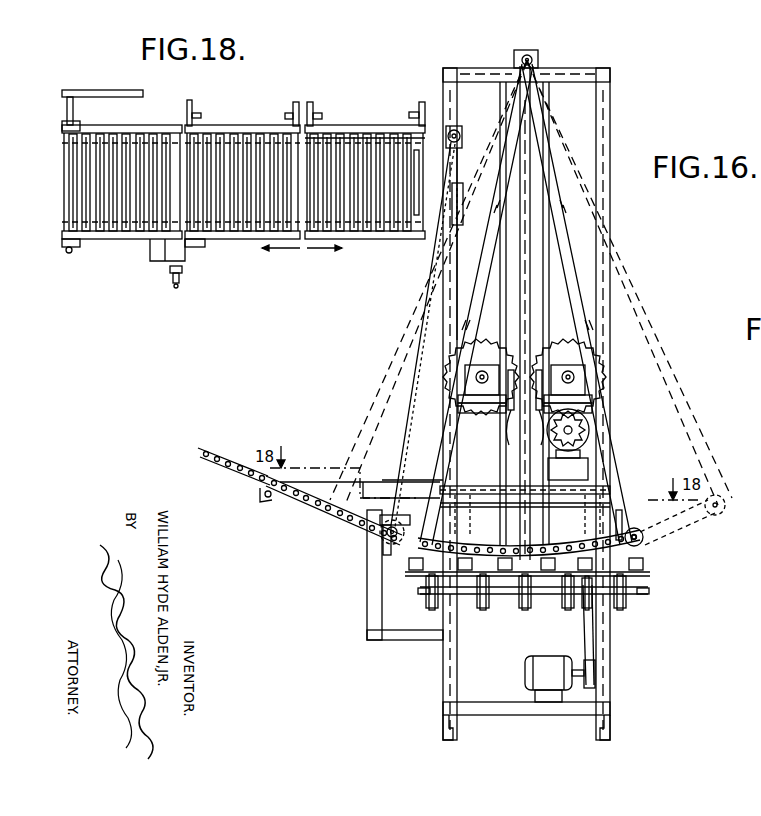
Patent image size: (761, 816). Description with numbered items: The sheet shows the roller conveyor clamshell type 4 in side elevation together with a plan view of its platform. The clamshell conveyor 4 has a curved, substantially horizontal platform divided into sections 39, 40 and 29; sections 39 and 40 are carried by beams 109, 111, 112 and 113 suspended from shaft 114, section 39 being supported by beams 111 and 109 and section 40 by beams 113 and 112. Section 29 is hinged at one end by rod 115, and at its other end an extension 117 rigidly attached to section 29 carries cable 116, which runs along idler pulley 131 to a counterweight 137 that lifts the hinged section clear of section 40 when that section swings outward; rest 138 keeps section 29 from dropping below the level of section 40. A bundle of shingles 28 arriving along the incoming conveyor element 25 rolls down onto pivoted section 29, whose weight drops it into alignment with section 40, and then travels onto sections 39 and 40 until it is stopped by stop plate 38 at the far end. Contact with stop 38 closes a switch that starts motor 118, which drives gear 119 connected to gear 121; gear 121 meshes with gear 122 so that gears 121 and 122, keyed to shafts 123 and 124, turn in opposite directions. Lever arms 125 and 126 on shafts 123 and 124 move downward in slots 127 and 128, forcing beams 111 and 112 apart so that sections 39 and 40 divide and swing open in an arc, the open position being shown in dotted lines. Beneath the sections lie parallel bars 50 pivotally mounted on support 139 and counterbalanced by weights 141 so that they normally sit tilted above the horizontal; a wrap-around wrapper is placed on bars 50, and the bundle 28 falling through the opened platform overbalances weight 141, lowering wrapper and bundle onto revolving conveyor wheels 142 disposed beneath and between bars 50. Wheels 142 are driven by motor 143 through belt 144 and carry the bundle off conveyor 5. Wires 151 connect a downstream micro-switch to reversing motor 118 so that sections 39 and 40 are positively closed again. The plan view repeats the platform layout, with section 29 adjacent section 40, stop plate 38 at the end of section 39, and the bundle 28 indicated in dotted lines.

In FIG. 16, the roller conveyor clamshell type 4 is at (653, 305).
In FIG. 16, the conveyor 5 is at (616, 650).
In FIG. 16, the feed chain conveyor 25 is at (204, 445).
In FIG. 18, the bundle of shingles 28 is at (356, 134).
In FIG. 16, the bundle of shingles 28 is at (480, 488).
In FIG. 18, the hinged platform section 29 is at (125, 232).
In FIG. 16, the hinged platform section 29 is at (306, 505).
In FIG. 18, the stop plate 38 is at (417, 215).
In FIG. 16, the stop plate 38 is at (621, 512).
In FIG. 18, the platform section 39 is at (378, 232).
In FIG. 16, the platform section 39 is at (640, 546).
In FIG. 18, the platform section 40 is at (252, 232).
In FIG. 16, the platform section 40 is at (480, 541).
In FIG. 16, the parallel bars 50 is at (472, 565).
In FIG. 18, the beam 109 is at (418, 108).
In FIG. 16, the beam 109 is at (606, 436).
In FIG. 18, the beam 111 is at (312, 108).
In FIG. 16, the beam 111 is at (543, 287).
In FIG. 18, the beam 112 is at (295, 104).
In FIG. 16, the beam 112 is at (506, 287).
In FIG. 18, the beam 113 is at (194, 112).
In FIG. 16, the beam 113 is at (370, 382).
In FIG. 16, the shaft 114 is at (527, 52).
In FIG. 18, the rod 115 is at (69, 253).
In FIG. 16, the rod 115 is at (268, 500).
In FIG. 18, the cable 116 is at (170, 270).
In FIG. 16, the cable 116 is at (412, 438).
In FIG. 18, the extension 117 is at (173, 285).
In FIG. 16, the extension 117 is at (385, 535).
In FIG. 16, the motor 118 is at (584, 430).
In FIG. 16, the gear 119 is at (577, 418).
In FIG. 16, the gear 121 is at (596, 382).
In FIG. 16, the gear 122 is at (480, 412).
In FIG. 16, the shaft 123 is at (568, 372).
In FIG. 16, the shaft 124 is at (482, 372).
In FIG. 16, the lever arm 125 is at (562, 342).
In FIG. 16, the lever arm 126 is at (490, 342).
In FIG. 16, the slot 127 is at (568, 465).
In FIG. 16, the slot 128 is at (511, 440).
In FIG. 16, the idler pulley 131 is at (461, 130).
In FIG. 16, the counterweight 137 is at (463, 205).
In FIG. 18, the rest 138 is at (196, 248).
In FIG. 16, the rest 138 is at (405, 548).
In FIG. 16, the support 139 is at (630, 590).
In FIG. 16, the weights 141 is at (548, 565).
In FIG. 16, the conveyor wheels 142 is at (430, 610).
In FIG. 16, the motor 143 is at (524, 676).
In FIG. 16, the belt 144 is at (588, 650).
In FIG. 16, the wires 151 is at (760, 660).